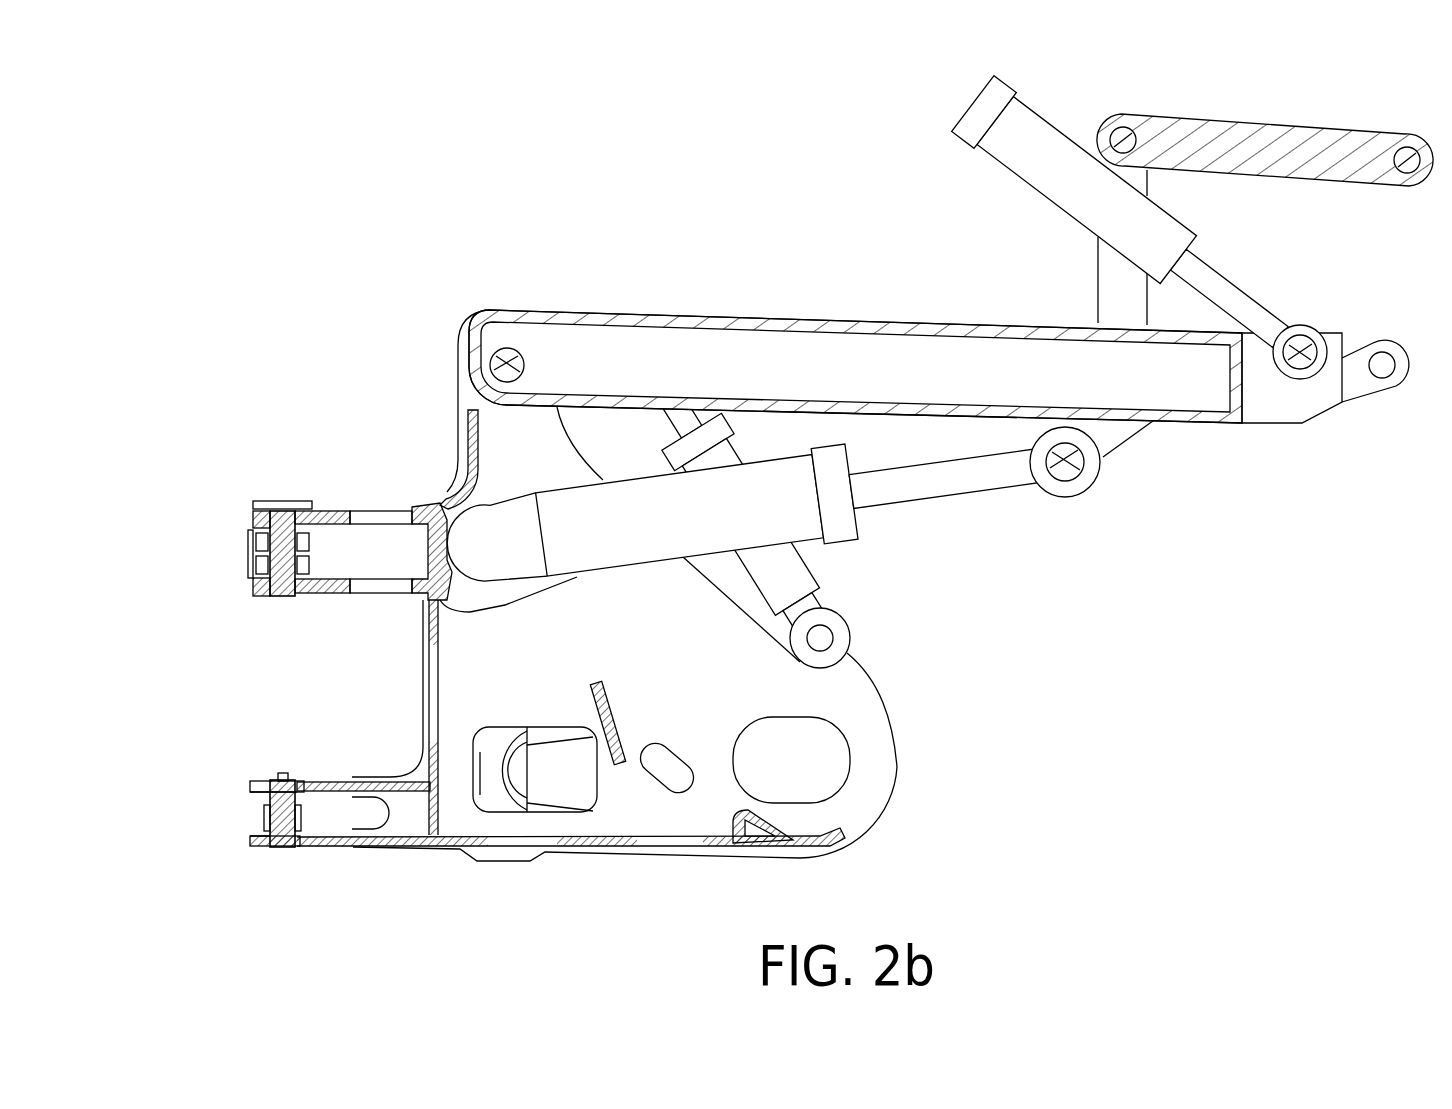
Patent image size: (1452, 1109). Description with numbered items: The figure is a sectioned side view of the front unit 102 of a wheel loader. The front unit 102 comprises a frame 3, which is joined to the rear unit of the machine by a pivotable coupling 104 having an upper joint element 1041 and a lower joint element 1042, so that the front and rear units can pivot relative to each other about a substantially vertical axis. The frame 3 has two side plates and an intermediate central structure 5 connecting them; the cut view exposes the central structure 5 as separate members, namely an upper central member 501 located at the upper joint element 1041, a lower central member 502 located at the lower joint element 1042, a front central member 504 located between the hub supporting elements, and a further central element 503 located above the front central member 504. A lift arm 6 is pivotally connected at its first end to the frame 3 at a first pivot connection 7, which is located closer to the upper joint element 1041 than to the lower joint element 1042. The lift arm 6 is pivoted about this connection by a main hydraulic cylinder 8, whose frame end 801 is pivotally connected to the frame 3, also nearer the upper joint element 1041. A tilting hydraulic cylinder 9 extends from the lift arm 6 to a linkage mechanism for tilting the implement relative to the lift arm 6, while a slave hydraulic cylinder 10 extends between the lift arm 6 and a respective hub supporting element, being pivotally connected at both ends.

The front unit 102 is at (584, 138).
The pivotable coupling 104 is at (237, 376).
The first pivot connection 7 is at (473, 370).
The lift arm 6 is at (716, 313).
The tilting hydraulic cylinder 9 is at (1070, 177).
The upper central member 501 is at (466, 437).
The frame end 801 is at (465, 535).
The upper joint element 1041 is at (295, 502).
The lower joint element 1042 is at (268, 780).
The frame 3 is at (482, 682).
The central structure 5 is at (884, 861).
The lower central member 502 is at (407, 838).
The further central element 503 is at (615, 762).
The front central member 504 is at (770, 830).
The main hydraulic cylinder 8 is at (952, 475).
The slave hydraulic cylinder 10 is at (783, 573).